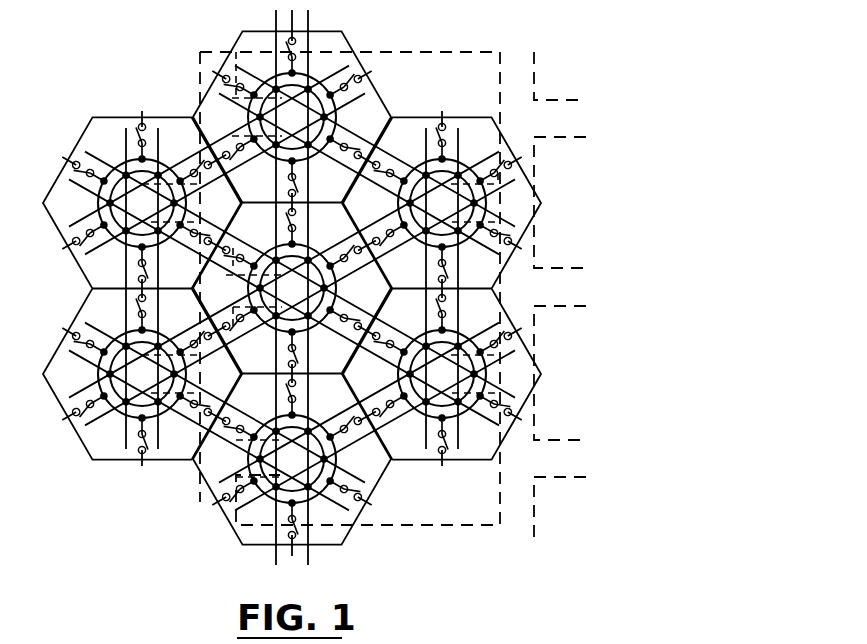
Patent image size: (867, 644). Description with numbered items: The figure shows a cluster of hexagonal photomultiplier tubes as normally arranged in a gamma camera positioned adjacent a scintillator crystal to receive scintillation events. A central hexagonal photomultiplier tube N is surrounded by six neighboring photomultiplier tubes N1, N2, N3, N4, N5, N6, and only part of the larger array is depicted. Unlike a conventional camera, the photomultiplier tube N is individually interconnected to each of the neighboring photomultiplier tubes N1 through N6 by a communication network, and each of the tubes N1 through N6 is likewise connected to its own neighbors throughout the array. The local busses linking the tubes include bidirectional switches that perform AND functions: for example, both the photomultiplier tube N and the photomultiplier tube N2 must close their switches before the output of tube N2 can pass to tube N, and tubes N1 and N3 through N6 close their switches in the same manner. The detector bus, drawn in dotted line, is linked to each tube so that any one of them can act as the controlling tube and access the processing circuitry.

The hexagonal photomultiplier tube N is at (326, 228).
The photomultiplier tube N1 is at (334, 68).
The photomultiplier tube N2 is at (484, 143).
The photomultiplier tube N3 is at (484, 314).
The photomultiplier tube N4 is at (334, 399).
The photomultiplier tube N5 is at (184, 314).
The photomultiplier tube N6 is at (184, 143).